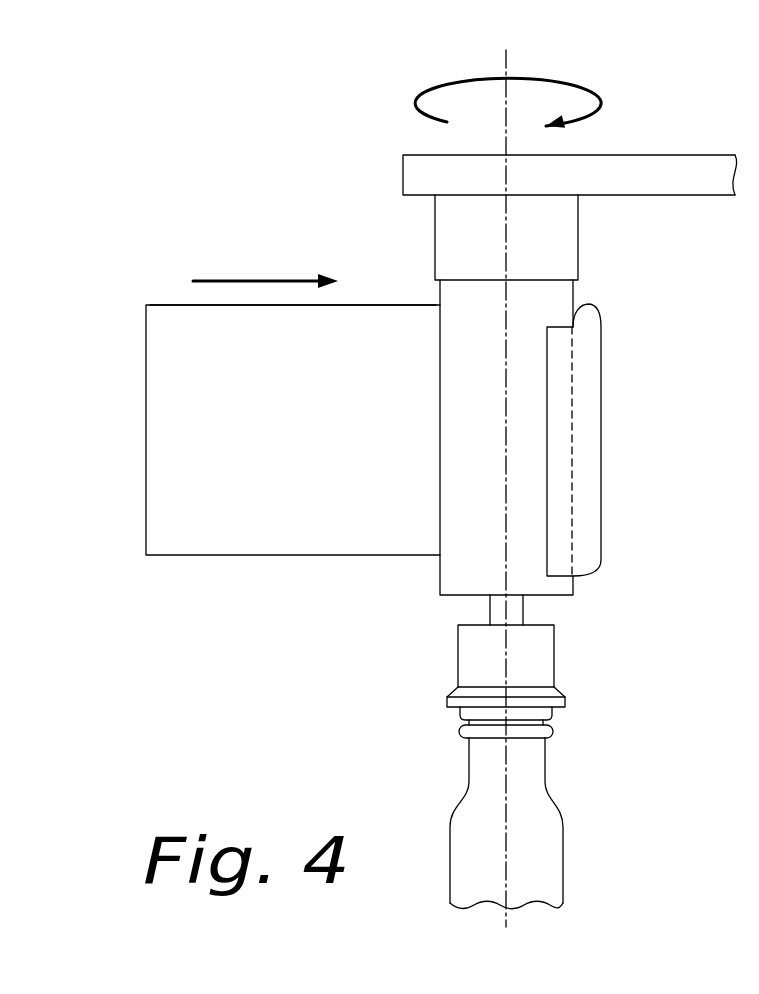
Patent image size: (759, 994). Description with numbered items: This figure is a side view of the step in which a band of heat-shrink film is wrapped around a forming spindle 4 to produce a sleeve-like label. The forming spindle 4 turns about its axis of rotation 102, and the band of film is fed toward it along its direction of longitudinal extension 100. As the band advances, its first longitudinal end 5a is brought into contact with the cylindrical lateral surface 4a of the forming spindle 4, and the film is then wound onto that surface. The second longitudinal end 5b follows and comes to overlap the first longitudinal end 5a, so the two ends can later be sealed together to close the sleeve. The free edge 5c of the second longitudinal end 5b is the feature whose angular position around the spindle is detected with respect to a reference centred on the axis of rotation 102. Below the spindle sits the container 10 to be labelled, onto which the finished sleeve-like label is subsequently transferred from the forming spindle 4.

The forming spindle 4 is at (522, 309).
The lateral surface of the forming spindle 4a is at (475, 363).
The first longitudinal end of the band of heat-shrink film 5a is at (549, 527).
The second longitudinal end of the band of heat-shrink film 5b is at (175, 290).
The free edge of the second longitudinal end 5c is at (147, 395).
The container 10 is at (532, 848).
The direction of longitudinal extension of the band of heat-shrink film 100 is at (248, 245).
The axis of rotation of the forming spindle 102 is at (521, 56).